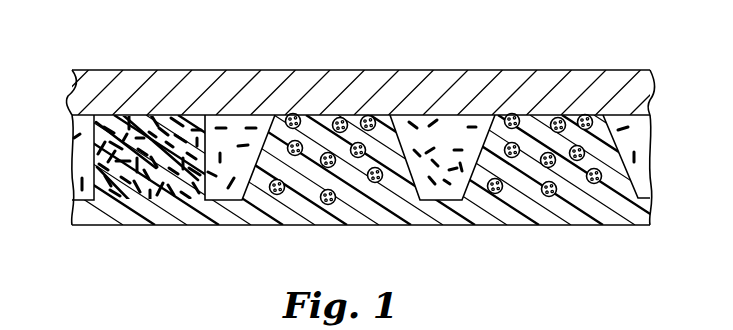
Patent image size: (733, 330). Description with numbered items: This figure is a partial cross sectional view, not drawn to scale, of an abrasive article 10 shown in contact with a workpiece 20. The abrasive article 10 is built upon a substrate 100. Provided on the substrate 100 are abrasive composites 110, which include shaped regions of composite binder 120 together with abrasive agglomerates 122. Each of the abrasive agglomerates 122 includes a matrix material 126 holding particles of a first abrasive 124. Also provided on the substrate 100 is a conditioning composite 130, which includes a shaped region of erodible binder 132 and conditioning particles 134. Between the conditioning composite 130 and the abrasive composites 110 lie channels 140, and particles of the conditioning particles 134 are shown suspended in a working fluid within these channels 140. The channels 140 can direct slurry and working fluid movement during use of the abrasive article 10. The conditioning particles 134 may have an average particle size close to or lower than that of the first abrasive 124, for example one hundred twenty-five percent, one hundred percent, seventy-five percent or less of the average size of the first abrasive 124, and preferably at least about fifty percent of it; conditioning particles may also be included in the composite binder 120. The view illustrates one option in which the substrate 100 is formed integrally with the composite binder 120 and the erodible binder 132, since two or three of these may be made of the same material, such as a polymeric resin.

The abrasive article 10 is at (366, 150).
The workpiece 20 is at (99, 64).
The substrate 100 is at (366, 150).
The abrasive composites 110 is at (398, 117).
The composite binder 120 is at (485, 148).
The abrasive agglomerates 122 is at (365, 104).
The first abrasive 124 is at (591, 184).
The matrix material 126 is at (546, 195).
The conditioning composite 130 is at (120, 130).
The erodible binder 132 is at (97, 160).
The conditioning particles 134 is at (251, 126).
The channels 140 is at (344, 147).